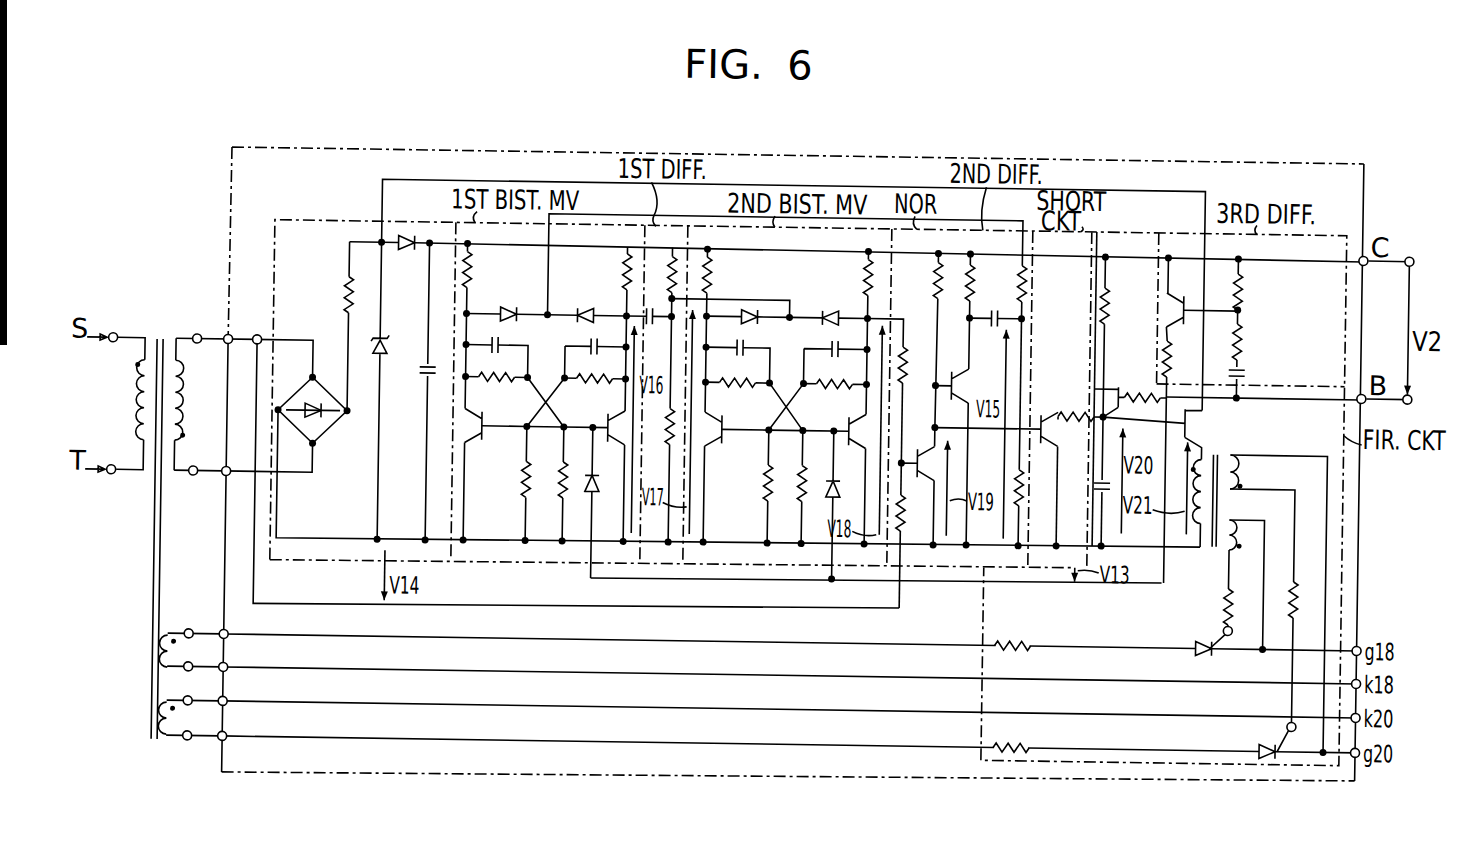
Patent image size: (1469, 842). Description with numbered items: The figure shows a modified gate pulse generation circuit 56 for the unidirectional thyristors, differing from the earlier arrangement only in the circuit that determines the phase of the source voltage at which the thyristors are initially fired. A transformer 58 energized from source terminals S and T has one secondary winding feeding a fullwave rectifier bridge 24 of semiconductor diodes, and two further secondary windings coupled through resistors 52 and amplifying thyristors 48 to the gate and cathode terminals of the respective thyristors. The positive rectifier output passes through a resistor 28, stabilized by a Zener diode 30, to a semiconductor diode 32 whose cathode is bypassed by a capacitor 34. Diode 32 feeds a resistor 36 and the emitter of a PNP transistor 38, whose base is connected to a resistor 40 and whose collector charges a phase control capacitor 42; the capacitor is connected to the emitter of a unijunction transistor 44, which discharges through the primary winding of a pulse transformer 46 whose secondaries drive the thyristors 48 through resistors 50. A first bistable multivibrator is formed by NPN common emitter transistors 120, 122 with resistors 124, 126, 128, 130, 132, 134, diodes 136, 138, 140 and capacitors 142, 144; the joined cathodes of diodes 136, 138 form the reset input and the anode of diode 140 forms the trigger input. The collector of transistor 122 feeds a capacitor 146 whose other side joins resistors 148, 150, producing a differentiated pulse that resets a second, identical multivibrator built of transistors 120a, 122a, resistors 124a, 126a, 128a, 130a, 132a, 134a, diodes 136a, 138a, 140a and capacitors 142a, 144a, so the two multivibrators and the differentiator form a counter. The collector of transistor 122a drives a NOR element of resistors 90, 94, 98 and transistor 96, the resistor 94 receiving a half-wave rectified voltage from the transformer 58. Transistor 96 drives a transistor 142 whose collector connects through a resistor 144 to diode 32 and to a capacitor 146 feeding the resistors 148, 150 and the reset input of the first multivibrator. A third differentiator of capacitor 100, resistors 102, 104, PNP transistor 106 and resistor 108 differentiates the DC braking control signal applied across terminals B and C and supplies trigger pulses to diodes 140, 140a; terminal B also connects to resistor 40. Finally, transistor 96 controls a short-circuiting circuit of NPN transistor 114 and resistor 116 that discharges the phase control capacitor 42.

The pulse generation circuit 56 is at (744, 131).
The transformer 58 is at (163, 335).
The fullwave rectifier bridge 24 is at (319, 376).
The resistor 28 is at (347, 292).
The Zener diode 30 is at (368, 391).
The semiconductor diode 32 is at (408, 232).
The capacitor 34 is at (428, 362).
The resistor 36 is at (1111, 300).
The PNP transistor 38 is at (1118, 376).
The resistor 40 is at (1142, 380).
The phase control capacitor 42 is at (1100, 474).
The unijunction transistor 44 is at (1185, 410).
The pulse transformer 46 is at (1233, 458).
The amplifying thyristor 48 is at (1205, 633).
The resistor 50 is at (1231, 590).
The resistor 52 is at (1023, 632).
The resistor 90 is at (908, 372).
The resistor 94 is at (911, 544).
The NPN common emitter transistor 96 is at (916, 447).
The resistor 98 is at (918, 340).
The capacitor 100 is at (1252, 356).
The resistor 102 is at (1251, 323).
The resistor 104 is at (1245, 278).
The PNP transistor 106 is at (1187, 289).
The resistor 108 is at (1165, 340).
The NPN common emitter transistor 114 is at (1061, 479).
The resistor 116 is at (1073, 404).
The NPN common emitter transistor 120 is at (492, 395).
The NPN common emitter transistor 122 is at (608, 414).
The resistor 124 is at (474, 270).
The resistor 126 is at (496, 365).
The resistor 128 is at (528, 474).
The resistor 130 is at (626, 274).
The resistor 132 is at (596, 365).
The resistor 134 is at (565, 461).
The semiconductor diode 136 is at (512, 307).
The semiconductor diode 138 is at (587, 307).
The semiconductor diode 140 is at (609, 465).
The capacitor / NPN common emitter transistor 142 is at (505, 342).
The capacitor / resistor 144 is at (586, 350).
The capacitor 146 is at (653, 319).
The resistor 148 is at (675, 250).
The resistor 150 is at (1022, 466).
The NPN common emitter transistor 120a is at (729, 394).
The NPN common emitter transistor 122a is at (852, 414).
The resistor 124a is at (712, 277).
The resistor 126a is at (734, 369).
The resistor 128a is at (769, 472).
The resistor 130a is at (870, 260).
The resistor 132a is at (833, 370).
The resistor 134a is at (804, 480).
The semiconductor diode 136a is at (760, 302).
The semiconductor diode 138a is at (834, 301).
The semiconductor diode 140a is at (838, 574).
The capacitor 142a is at (746, 343).
The capacitor 144a is at (840, 332).